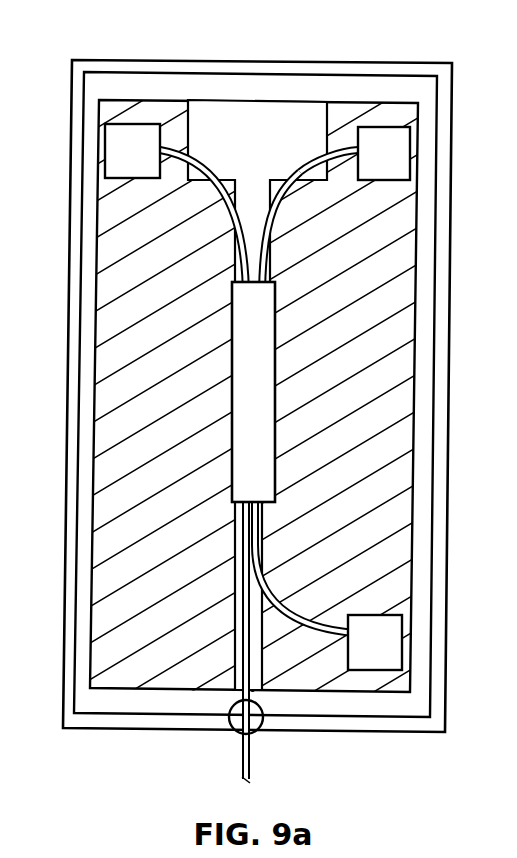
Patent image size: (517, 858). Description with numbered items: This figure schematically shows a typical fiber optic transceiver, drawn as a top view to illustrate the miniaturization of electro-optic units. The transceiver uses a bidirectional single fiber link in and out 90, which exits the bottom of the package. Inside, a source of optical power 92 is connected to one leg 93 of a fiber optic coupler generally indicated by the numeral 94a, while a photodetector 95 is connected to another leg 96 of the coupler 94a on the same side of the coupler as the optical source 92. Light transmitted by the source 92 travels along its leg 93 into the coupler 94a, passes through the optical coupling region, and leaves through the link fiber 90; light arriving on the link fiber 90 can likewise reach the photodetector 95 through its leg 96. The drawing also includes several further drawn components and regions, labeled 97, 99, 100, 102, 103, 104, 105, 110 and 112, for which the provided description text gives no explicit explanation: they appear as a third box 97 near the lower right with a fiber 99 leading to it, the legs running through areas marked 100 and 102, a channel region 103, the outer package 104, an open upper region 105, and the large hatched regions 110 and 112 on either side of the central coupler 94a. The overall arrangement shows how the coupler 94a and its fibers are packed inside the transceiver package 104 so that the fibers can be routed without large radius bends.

The bidirectional single fiber link 90 is at (243, 762).
The source of optical power 92 is at (123, 148).
The leg of fiber optic coupler 93 is at (161, 150).
The fiber optic coupler 94a is at (248, 342).
The photodetector 95 is at (398, 148).
The leg of coupler 96 is at (341, 157).
The photodetector 97 is at (385, 650).
The detector fiber 99 is at (330, 632).
The first optical fiber 100 is at (222, 176).
The second optical fiber 102 is at (277, 198).
The fiber channel 103 is at (265, 603).
The housing 104 is at (440, 543).
The recess 105 is at (237, 123).
The potting material 110 is at (120, 437).
The potting material 112 is at (392, 466).